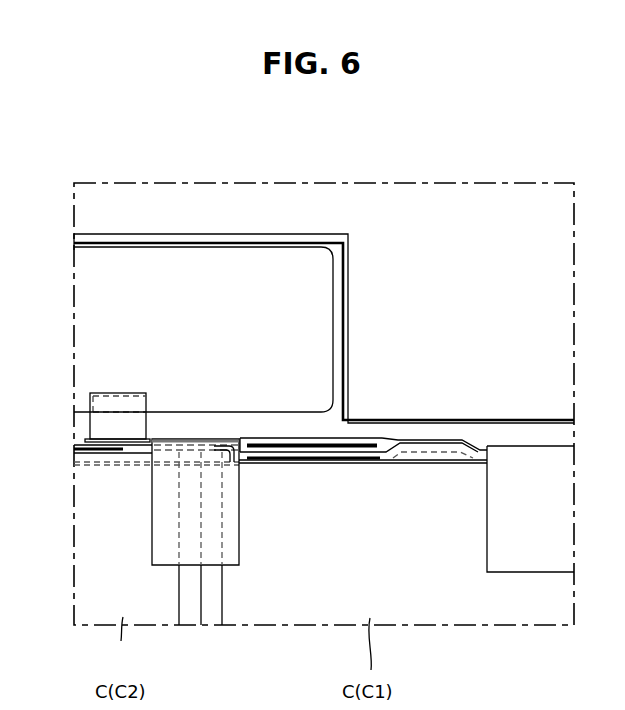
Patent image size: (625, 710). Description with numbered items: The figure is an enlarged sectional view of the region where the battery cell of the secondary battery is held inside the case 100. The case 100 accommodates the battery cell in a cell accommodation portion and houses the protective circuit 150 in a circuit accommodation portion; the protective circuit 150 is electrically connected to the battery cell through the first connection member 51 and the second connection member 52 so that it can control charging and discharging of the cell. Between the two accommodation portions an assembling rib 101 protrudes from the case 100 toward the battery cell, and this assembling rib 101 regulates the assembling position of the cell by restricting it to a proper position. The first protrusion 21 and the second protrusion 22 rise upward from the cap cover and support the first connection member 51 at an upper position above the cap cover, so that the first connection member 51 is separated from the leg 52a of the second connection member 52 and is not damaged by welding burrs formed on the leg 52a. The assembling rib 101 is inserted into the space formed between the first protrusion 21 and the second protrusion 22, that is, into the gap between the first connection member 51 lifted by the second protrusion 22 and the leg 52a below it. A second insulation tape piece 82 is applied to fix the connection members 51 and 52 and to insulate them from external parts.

The protective circuit 150 is at (280, 258).
The case 100 is at (347, 265).
The second connection member 52 is at (178, 445).
The second protrusion 22 is at (216, 451).
The first connection member 51 is at (284, 440).
The assembling rib 101 is at (371, 447).
The first protrusion 21 is at (428, 452).
The leg 52a is at (313, 460).
The second insulation tape piece 82 is at (152, 512).